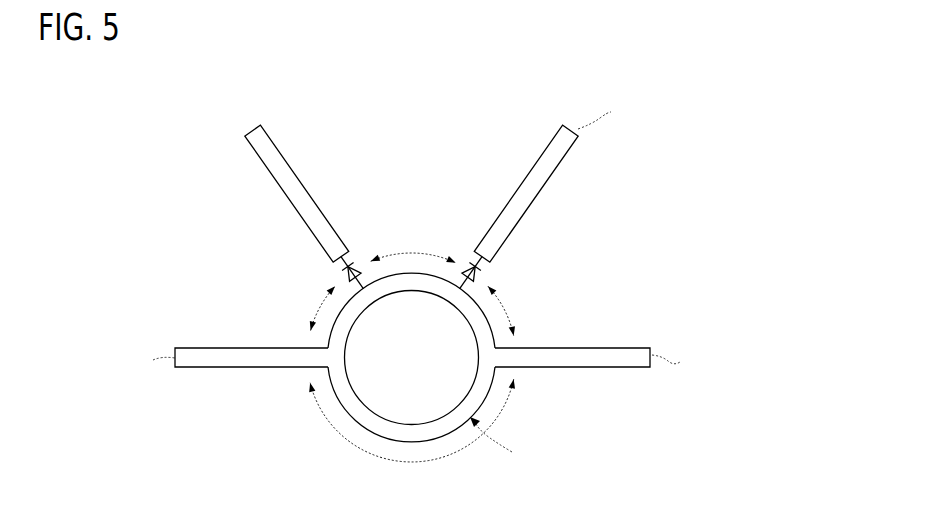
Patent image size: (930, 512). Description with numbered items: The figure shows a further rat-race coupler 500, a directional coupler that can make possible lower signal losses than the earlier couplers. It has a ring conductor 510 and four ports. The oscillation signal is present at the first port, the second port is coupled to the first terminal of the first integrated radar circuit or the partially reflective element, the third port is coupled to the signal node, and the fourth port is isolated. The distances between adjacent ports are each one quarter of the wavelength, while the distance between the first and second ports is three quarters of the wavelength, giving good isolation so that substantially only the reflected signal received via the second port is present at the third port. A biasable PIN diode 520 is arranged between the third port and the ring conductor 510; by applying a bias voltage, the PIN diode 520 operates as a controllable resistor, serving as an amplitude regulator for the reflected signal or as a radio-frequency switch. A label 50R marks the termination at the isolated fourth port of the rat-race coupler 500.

The rat-race coupler 500 is at (118, 496).
The ring conductor 510 is at (352, 417).
The biasable PIN diode 520 is at (329, 272).
The 50 ohm termination resistor 50R is at (258, 125).